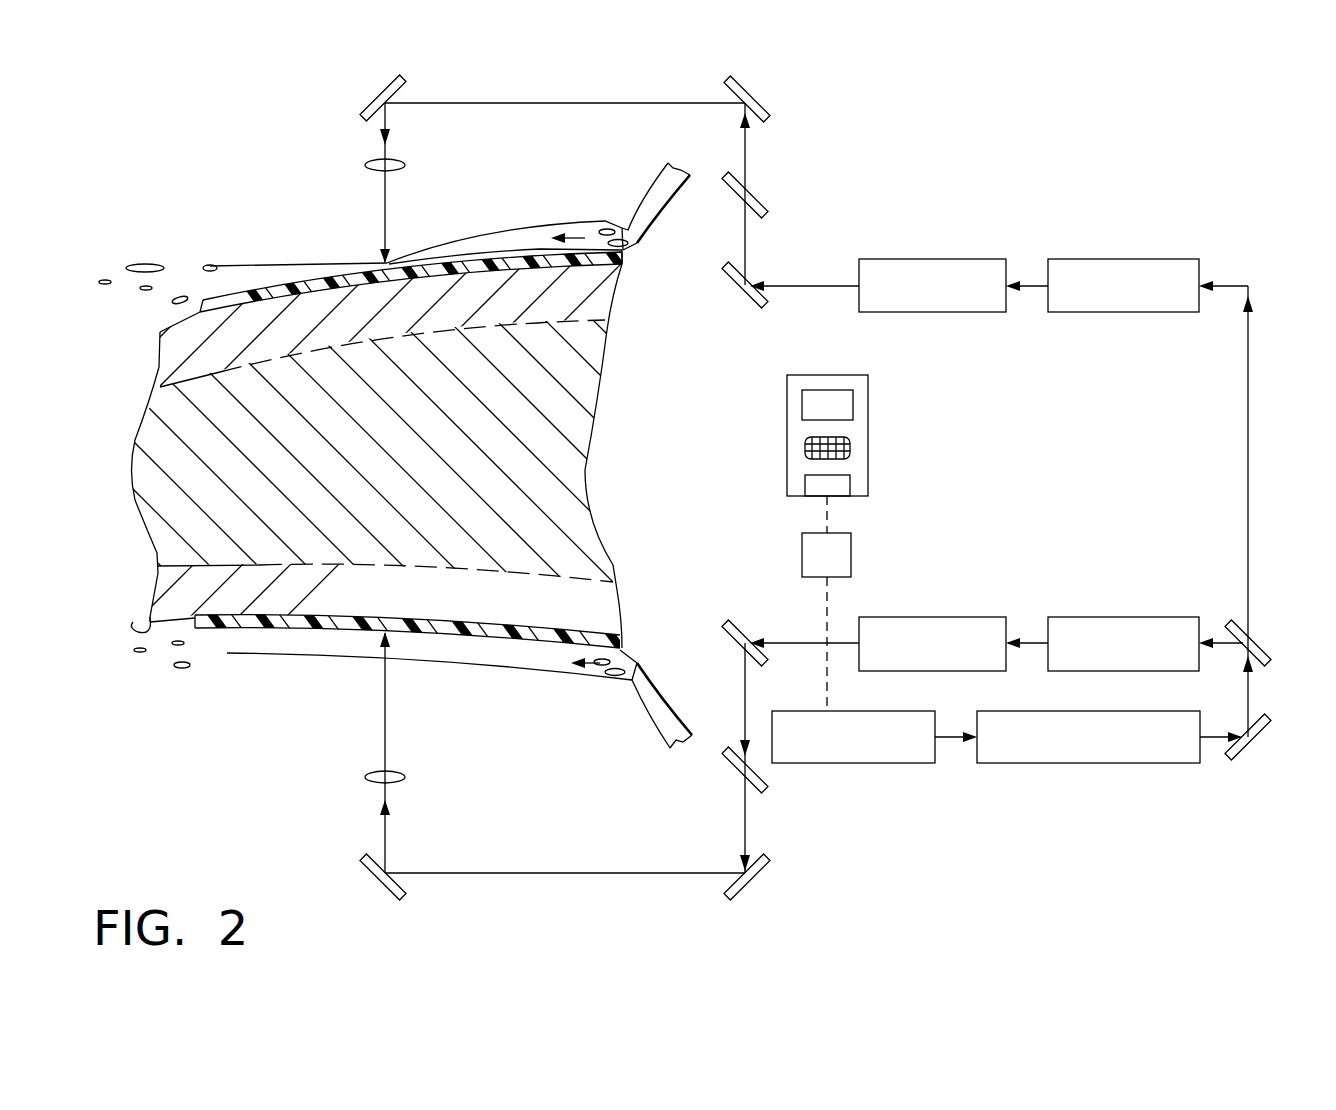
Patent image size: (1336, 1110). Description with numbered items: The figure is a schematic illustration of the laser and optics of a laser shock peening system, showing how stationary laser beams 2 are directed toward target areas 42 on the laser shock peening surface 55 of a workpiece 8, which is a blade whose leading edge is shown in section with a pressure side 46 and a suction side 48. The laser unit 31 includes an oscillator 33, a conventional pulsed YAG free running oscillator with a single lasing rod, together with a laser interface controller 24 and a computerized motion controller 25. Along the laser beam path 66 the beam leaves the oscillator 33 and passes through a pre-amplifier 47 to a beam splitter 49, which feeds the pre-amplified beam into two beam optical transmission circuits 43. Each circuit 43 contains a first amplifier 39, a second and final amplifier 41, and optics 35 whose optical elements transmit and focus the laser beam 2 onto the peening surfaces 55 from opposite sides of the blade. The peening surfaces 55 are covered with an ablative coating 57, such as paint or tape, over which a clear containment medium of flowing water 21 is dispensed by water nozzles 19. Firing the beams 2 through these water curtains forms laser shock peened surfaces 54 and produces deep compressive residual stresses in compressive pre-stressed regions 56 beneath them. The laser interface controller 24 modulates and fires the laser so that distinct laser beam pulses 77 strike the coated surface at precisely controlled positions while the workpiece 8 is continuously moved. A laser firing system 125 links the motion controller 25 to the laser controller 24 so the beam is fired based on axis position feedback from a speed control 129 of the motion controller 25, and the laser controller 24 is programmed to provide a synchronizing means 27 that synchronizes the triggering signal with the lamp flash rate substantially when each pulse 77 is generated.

The laser beam 2 is at (388, 209).
The workpiece 8 is at (522, 452).
The water nozzle 19 is at (628, 683).
The flowing water 21 is at (533, 226).
The laser interface controller 24 is at (843, 565).
The computerized motion controller 25 is at (870, 410).
The synchronizing means 27 is at (940, 485).
The laser unit 31 is at (1095, 478).
The oscillator 33 is at (845, 763).
The optics 35 is at (786, 167).
The first amplifier 39 is at (1103, 258).
The second and final amplifier 41 is at (913, 258).
The target area 42 is at (389, 263).
The beam optical transmission circuit 43 is at (1205, 580).
The pressure side 46 is at (312, 630).
The pre-amplifier 47 is at (1090, 710).
The suction side 48 is at (322, 276).
The beam splitter 49 is at (1252, 765).
The laser shock peened surface 54 is at (163, 330).
The laser shock peening surface 55 is at (203, 645).
The compressive pre-stressed region 56 is at (183, 354).
The ablative coating 57 is at (215, 295).
The laser beam path 66 is at (942, 735).
The laser beam pulse 77 is at (960, 740).
The laser firing system 125 is at (760, 575).
The speed control 129 is at (837, 490).